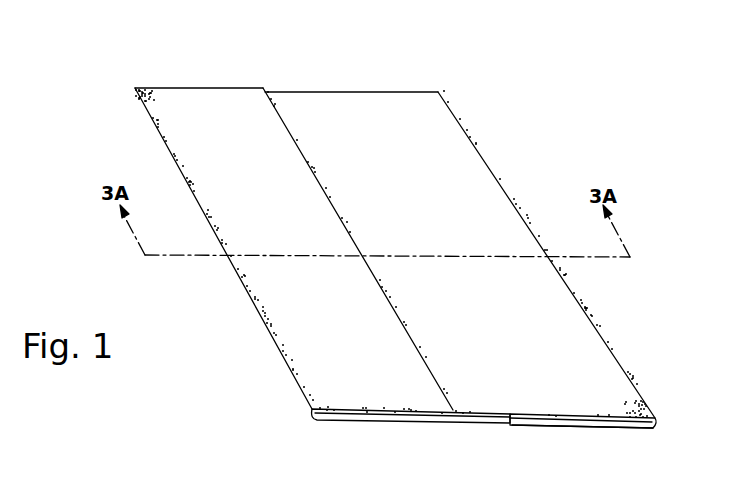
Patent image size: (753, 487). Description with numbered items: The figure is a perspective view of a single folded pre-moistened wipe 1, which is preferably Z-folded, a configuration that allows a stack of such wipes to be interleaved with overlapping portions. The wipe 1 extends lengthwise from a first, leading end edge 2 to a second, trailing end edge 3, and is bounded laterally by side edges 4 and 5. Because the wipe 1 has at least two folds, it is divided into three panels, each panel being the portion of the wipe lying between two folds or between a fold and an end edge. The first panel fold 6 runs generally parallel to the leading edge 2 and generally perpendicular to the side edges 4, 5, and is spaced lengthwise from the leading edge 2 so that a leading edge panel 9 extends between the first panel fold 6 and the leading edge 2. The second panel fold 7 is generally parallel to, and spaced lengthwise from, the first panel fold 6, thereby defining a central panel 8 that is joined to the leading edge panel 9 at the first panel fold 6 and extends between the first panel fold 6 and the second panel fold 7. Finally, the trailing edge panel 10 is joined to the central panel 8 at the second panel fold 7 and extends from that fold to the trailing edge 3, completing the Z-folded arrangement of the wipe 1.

The pre-moistened wipe 1 is at (412, 244).
The leading end edge 2 is at (277, 108).
The trailing end edge 3 is at (512, 423).
The side edge 4 is at (352, 92).
The side edge 5 is at (397, 420).
The first panel fold 6 is at (232, 287).
The second panel fold 7 is at (466, 127).
The central panel 8 is at (583, 372).
The leading edge panel 9 is at (340, 383).
The trailing edge panel 10 is at (583, 428).